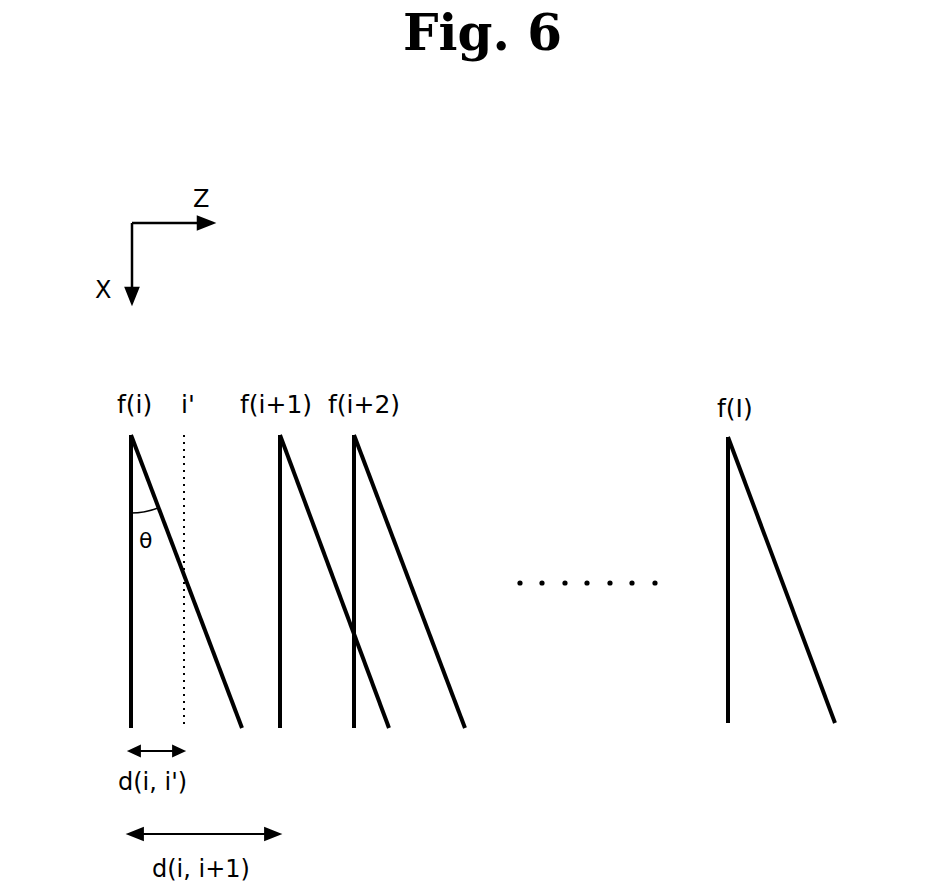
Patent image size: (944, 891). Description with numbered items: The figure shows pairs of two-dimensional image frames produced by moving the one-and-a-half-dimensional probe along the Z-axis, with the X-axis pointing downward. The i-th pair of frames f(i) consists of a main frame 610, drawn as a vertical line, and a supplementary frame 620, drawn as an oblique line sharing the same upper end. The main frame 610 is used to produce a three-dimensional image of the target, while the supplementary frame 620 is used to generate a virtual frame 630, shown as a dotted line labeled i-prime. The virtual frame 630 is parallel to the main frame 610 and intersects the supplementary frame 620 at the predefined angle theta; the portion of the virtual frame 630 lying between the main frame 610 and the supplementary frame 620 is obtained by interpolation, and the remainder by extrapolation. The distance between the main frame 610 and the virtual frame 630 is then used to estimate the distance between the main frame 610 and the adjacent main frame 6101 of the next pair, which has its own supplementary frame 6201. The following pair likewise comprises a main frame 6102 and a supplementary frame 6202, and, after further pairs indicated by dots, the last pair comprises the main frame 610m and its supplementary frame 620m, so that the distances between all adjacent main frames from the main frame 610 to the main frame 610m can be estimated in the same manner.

The main frame 610 is at (129, 598).
The supplementary frame 620 is at (204, 620).
The virtual frame 630 is at (190, 487).
The main frame 6101 is at (283, 690).
The oblique end face of fiber f(i+1) 6201 is at (310, 507).
The optical fiber f(i+2) 6102 is at (356, 707).
The oblique end face of fiber f(i+2) 6202 is at (455, 553).
The main frame 610m is at (730, 697).
The oblique end face of fiber f(I) 620m is at (823, 677).